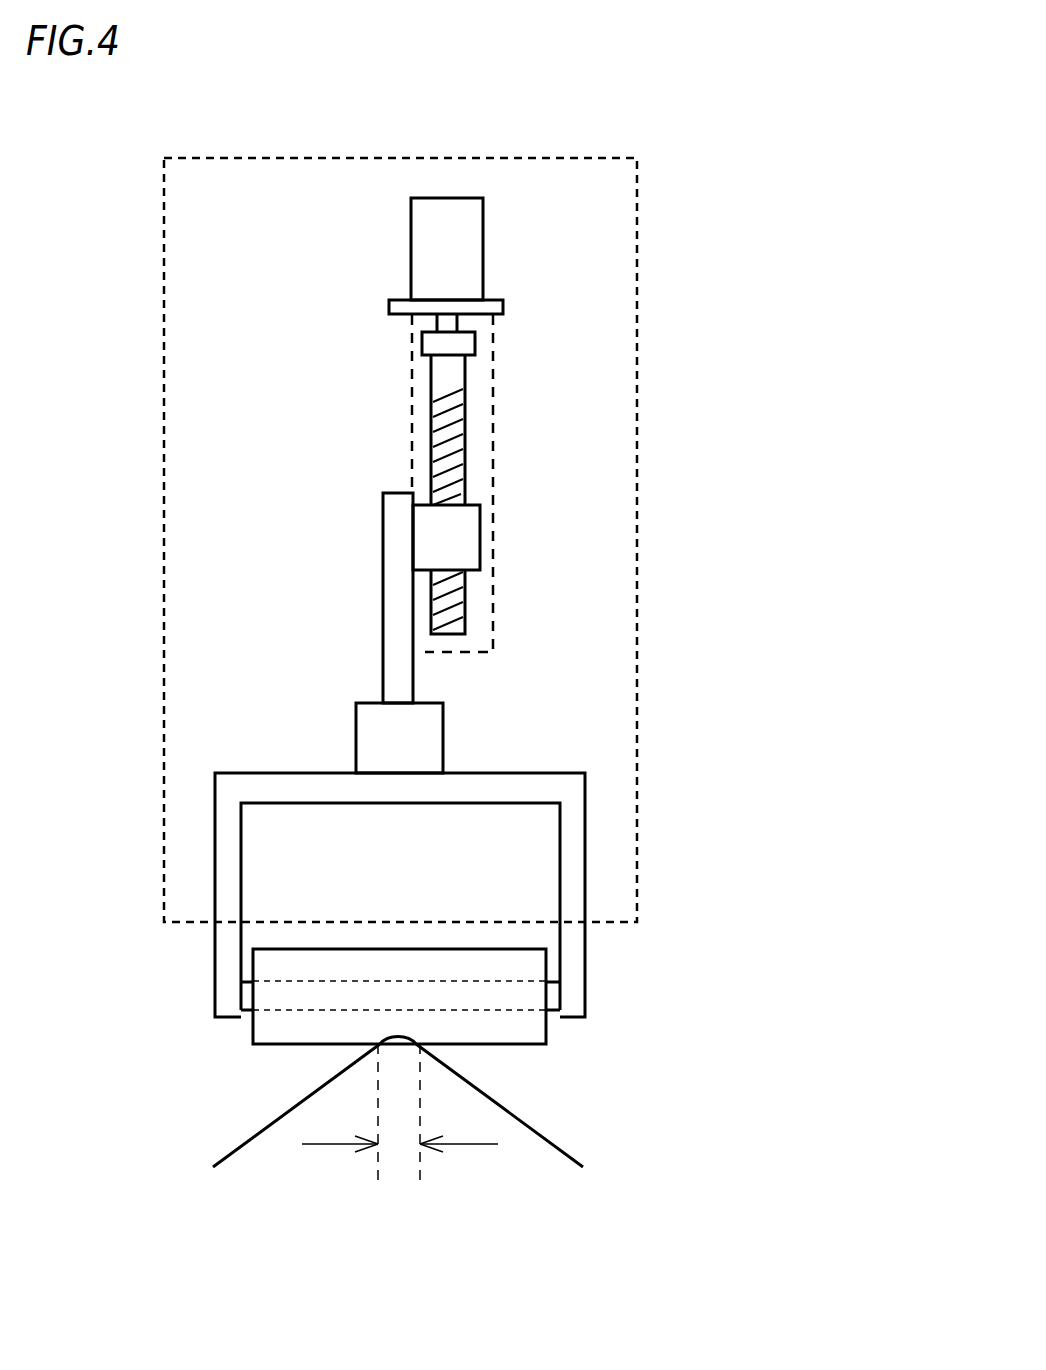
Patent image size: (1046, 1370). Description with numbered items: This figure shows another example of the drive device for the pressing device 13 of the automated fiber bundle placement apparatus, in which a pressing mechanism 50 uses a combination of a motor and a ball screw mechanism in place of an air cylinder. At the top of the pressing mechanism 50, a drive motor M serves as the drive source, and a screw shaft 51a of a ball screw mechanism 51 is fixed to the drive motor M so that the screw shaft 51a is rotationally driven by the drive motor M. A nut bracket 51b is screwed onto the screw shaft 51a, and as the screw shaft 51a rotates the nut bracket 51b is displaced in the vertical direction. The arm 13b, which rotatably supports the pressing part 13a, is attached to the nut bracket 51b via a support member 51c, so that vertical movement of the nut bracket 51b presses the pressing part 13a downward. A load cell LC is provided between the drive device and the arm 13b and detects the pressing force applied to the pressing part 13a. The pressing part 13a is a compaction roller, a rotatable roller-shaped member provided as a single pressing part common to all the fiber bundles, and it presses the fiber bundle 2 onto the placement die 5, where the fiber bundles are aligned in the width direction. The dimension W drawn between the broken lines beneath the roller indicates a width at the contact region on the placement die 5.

The pressing mechanism 50 is at (389, 158).
The ball screw mechanism 51 is at (280, 513).
The screw shaft 51a is at (431, 385).
The nut bracket 51b is at (480, 508).
The support member 51c is at (398, 493).
The drive motor M is at (411, 250).
The load cell LC is at (443, 703).
The pressing device 13 is at (805, 948).
The pressing part 13a is at (495, 1044).
The arm 13b is at (262, 773).
The fiber bundle 2 is at (395, 1040).
The placement die 5 is at (565, 1148).
The width W is at (400, 1132).